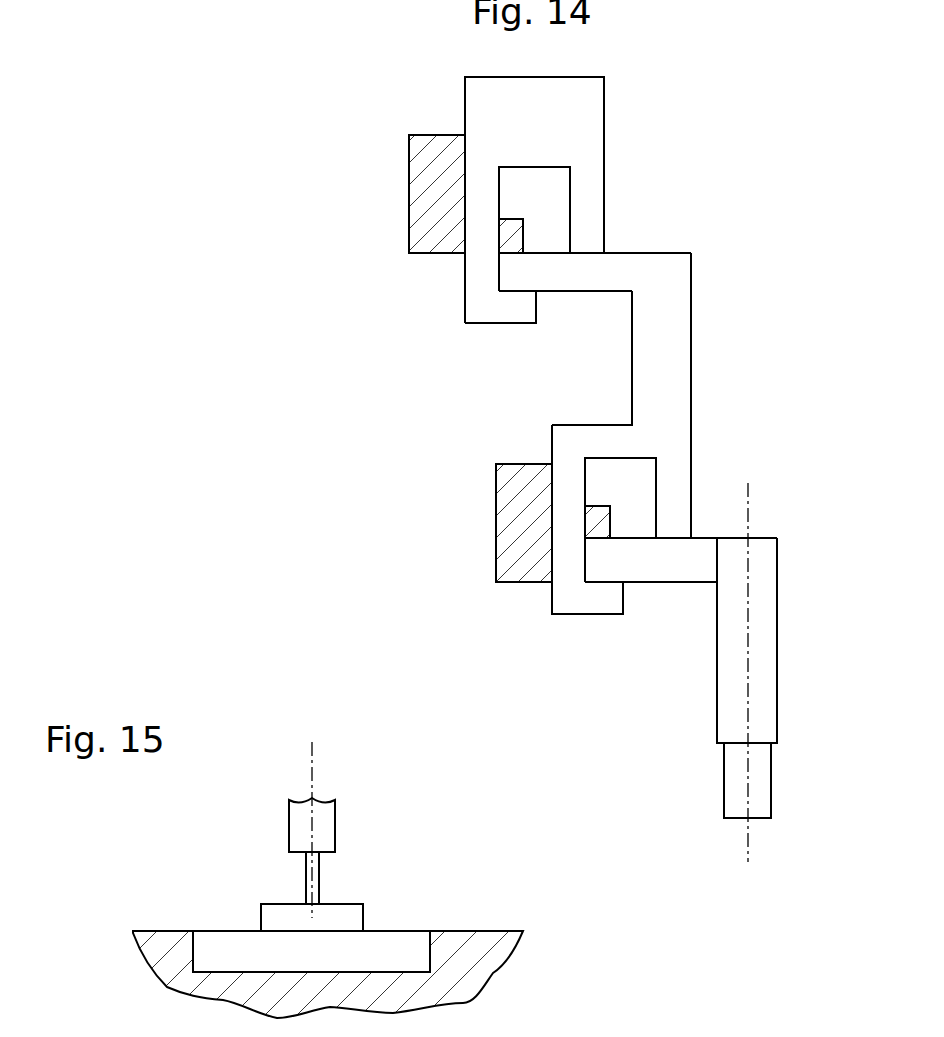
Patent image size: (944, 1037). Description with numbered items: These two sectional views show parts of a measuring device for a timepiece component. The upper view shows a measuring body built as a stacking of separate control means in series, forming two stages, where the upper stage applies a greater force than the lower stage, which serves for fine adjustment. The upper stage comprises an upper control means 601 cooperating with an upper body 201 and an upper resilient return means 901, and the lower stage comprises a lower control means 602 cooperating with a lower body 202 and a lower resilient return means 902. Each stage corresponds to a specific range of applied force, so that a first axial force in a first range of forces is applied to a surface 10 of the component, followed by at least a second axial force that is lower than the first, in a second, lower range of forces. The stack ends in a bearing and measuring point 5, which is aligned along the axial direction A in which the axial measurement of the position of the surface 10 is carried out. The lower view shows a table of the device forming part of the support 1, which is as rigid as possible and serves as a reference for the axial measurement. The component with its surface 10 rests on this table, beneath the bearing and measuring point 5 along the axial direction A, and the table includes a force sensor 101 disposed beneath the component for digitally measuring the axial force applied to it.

In FIG. 14, the upper body 201 is at (482, 108).
In FIG. 14, the upper control means 601 is at (442, 202).
In FIG. 14, the upper resilient return means 901 is at (525, 269).
In FIG. 14, the lower control means 602 is at (518, 482).
In FIG. 14, the lower body 202 is at (572, 533).
In FIG. 14, the lower resilient return means 902 is at (613, 565).
In FIG. 14, the bearing and measuring point 5 is at (761, 789).
In FIG. 15, the bearing and measuring point 5 is at (325, 832).
In FIG. 14, the axial direction A is at (758, 494).
In FIG. 15, the axial direction A is at (322, 762).
In FIG. 15, the support 1 is at (487, 958).
In FIG. 15, the force sensor 101 is at (410, 938).
In FIG. 15, the surface 10 is at (345, 911).